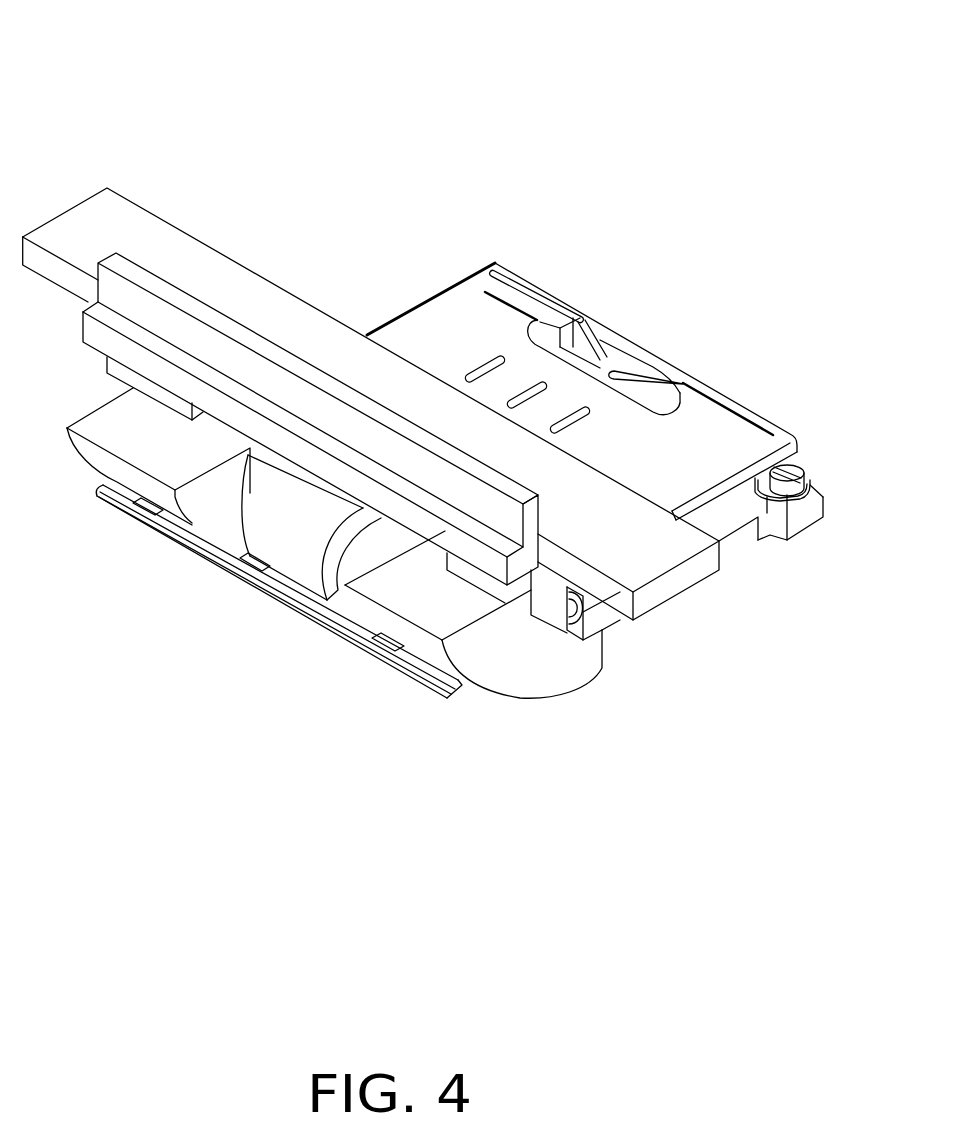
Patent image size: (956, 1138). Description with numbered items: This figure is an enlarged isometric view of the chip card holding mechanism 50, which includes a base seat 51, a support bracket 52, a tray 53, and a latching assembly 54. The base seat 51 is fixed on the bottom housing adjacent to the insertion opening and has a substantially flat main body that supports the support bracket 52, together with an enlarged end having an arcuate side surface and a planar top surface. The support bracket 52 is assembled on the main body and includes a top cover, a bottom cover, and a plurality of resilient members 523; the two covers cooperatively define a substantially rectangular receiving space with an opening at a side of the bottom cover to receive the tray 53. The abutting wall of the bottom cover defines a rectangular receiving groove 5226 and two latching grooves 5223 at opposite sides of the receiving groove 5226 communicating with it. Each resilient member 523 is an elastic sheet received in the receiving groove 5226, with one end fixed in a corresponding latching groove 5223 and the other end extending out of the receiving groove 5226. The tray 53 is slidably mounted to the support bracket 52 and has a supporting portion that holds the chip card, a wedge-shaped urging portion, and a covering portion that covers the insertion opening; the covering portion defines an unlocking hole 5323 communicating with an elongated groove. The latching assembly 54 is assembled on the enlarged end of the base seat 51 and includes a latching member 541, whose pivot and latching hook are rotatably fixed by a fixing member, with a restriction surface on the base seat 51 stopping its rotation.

The holding mechanism 50 is at (268, 92).
The base seat 51 is at (555, 662).
The support bracket 52 is at (601, 363).
The resilient member 523 is at (652, 377).
The latching groove 5223 is at (527, 285).
The receiving groove 5226 is at (608, 363).
The tray 53 is at (279, 621).
The unlocking hole 5323 is at (263, 593).
The latching assembly 54 is at (82, 232).
The latching member 541 is at (277, 515).